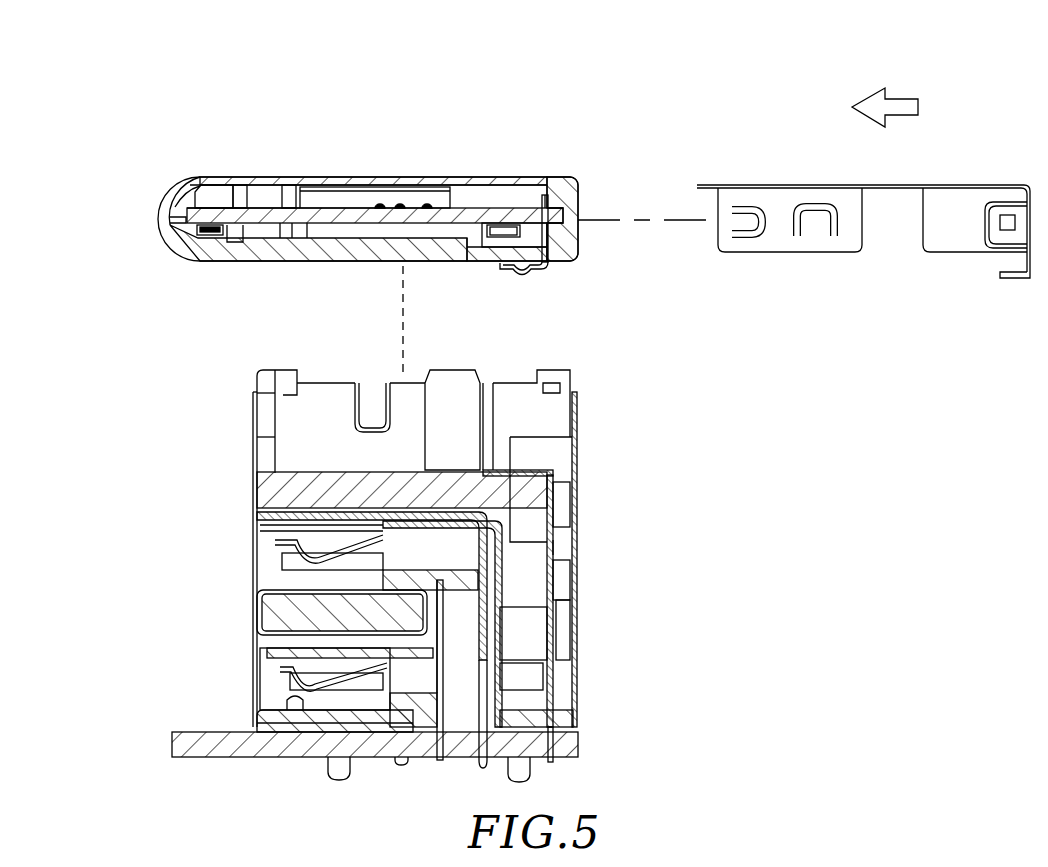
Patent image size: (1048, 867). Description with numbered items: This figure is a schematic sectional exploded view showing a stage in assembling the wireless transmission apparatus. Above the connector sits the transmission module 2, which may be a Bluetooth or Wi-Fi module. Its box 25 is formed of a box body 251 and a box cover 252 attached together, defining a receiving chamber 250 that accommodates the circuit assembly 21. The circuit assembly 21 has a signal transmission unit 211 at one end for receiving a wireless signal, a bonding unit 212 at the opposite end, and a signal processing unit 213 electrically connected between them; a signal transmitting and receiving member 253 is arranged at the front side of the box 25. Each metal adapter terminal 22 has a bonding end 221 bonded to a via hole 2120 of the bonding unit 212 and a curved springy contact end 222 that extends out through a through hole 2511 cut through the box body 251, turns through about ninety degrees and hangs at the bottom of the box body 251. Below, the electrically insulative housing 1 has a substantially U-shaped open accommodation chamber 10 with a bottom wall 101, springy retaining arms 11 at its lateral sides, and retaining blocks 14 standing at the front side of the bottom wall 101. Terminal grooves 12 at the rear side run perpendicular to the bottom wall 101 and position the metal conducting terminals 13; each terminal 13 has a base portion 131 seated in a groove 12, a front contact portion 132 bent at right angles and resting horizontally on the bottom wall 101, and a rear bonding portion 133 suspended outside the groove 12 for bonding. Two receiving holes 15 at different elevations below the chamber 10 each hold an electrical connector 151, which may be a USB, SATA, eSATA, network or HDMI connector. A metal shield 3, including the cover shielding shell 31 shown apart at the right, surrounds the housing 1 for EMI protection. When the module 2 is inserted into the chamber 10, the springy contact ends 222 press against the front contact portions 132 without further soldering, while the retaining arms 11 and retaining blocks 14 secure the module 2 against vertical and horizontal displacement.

The electrically insulative housing 1 is at (150, 392).
The accommodation chamber 10 is at (302, 452).
The bottom wall 101 is at (266, 478).
The springy retaining arm 11 is at (452, 376).
The terminal groove 12 is at (560, 503).
The metal conducting terminal 13 is at (555, 620).
The base portion 131 is at (555, 548).
The front contact portion 132 is at (530, 477).
The rear bonding portion 133 is at (577, 746).
The retaining block 14 is at (262, 407).
The receiving hole 15 is at (332, 513).
The electrical connector 151 is at (290, 706).
The transmission module 2 is at (150, 222).
The circuit assembly 21 is at (438, 215).
The signal transmission unit 211 is at (246, 208).
The bonding unit 212 is at (549, 226).
The via hole 2120 is at (561, 208).
The signal processing unit 213 is at (383, 204).
The metal adapter terminal 22 is at (563, 218).
The bonding end 221 is at (545, 205).
The springy contact end 222 is at (523, 270).
The box 25 is at (180, 108).
The receiving chamber 250 is at (358, 233).
The box body 251 is at (183, 238).
The through hole 2511 is at (502, 252).
The box cover 252 is at (232, 189).
The signal transmitting and receiving member 253 is at (174, 200).
The metal shield 3 is at (697, 102).
The cover shielding shell 31 is at (735, 185).